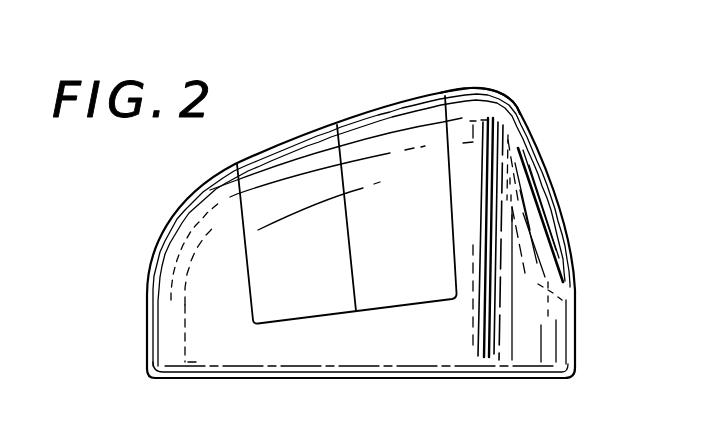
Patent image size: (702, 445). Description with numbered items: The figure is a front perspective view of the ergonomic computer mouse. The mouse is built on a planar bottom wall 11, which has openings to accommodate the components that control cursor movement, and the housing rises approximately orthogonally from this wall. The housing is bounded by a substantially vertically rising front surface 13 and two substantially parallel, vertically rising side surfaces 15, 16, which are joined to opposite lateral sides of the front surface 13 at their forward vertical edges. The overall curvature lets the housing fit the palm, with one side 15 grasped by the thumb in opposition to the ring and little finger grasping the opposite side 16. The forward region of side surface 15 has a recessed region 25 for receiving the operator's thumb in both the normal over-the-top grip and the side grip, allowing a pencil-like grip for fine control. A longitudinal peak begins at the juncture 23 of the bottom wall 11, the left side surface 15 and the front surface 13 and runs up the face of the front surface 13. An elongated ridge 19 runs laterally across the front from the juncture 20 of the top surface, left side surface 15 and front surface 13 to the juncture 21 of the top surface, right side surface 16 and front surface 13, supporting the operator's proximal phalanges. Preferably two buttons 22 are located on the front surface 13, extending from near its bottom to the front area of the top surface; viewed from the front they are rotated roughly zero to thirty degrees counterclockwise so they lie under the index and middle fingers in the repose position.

The bottom wall 11 is at (227, 406).
The front surface 13 is at (359, 328).
The side surface 15 is at (578, 337).
The side surface 16 is at (143, 310).
The elongated ridge 19 is at (338, 124).
The juncture 20 is at (473, 90).
The juncture 21 is at (182, 200).
The buttons 22 is at (307, 170).
The juncture 23 is at (493, 350).
The recessed region 25 is at (546, 224).